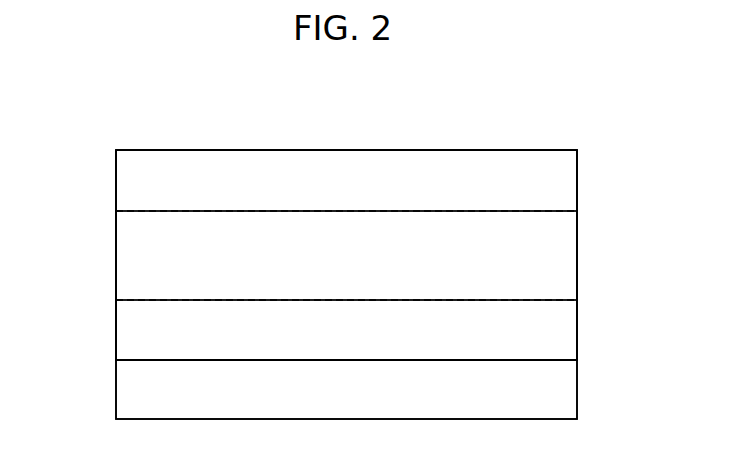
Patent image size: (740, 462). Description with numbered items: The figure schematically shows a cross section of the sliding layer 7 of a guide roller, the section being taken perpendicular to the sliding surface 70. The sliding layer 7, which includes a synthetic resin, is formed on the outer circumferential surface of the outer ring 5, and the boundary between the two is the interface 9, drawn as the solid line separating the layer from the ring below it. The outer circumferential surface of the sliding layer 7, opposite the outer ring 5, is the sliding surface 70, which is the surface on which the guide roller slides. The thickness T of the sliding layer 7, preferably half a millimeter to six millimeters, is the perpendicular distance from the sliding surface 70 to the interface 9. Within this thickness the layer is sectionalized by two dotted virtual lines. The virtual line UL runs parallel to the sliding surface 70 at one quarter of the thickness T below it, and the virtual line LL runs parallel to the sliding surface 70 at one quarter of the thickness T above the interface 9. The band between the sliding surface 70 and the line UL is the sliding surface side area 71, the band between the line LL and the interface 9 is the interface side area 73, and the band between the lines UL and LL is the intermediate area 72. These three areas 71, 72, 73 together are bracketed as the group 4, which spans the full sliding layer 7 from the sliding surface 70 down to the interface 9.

The sliding surface 70 is at (476, 150).
The sliding layer 7 is at (577, 258).
The sliding surface side area 71 is at (111, 150).
The intermediate area 72 is at (111, 211).
The interface side area 73 is at (111, 300).
The layer stack 4 is at (45, 150).
The virtual line UL is at (562, 211).
The virtual line LL is at (562, 300).
The interface 9 is at (560, 359).
The outer ring 5 is at (562, 389).